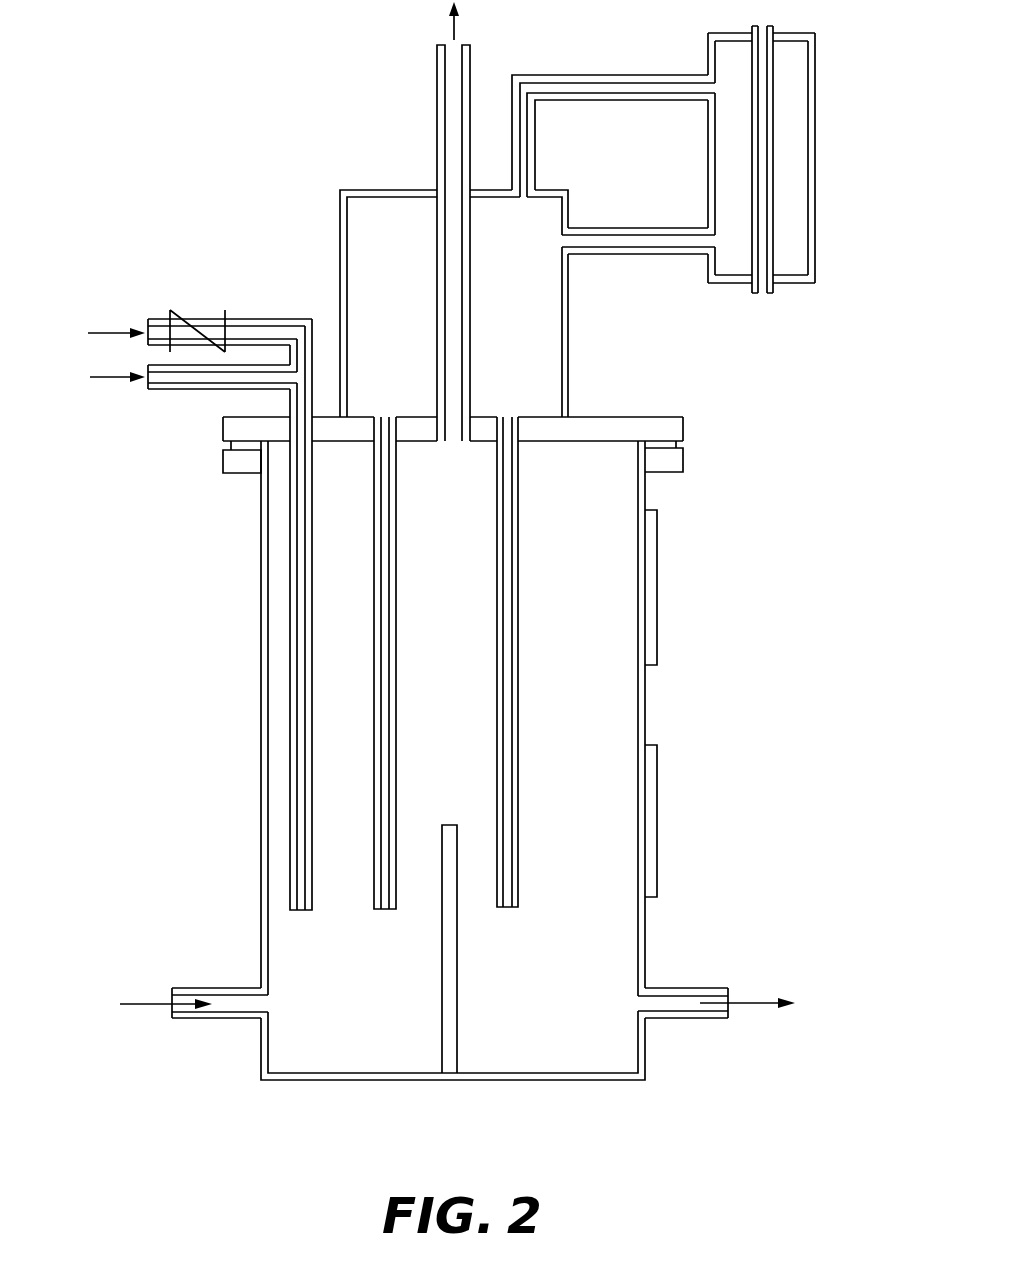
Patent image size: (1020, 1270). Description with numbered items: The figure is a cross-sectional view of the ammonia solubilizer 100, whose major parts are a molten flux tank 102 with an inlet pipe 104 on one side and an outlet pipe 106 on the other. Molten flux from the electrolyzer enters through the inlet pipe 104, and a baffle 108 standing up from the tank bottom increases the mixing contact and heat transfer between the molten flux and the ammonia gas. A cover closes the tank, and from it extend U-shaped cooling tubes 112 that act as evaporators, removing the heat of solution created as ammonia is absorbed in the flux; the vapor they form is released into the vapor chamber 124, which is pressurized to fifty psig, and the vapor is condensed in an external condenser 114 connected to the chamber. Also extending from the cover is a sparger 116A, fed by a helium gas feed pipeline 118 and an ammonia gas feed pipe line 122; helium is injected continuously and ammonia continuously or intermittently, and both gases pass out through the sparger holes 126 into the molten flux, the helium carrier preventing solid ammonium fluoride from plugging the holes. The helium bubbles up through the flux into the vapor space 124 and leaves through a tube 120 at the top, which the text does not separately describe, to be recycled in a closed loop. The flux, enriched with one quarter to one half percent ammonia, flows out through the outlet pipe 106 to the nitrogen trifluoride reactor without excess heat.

The ammonia solubilizer 100 is at (245, 740).
The molten flux tank 102 is at (645, 943).
The inlet pipe 104 is at (240, 1020).
The outlet pipe 106 is at (673, 1020).
The baffle 108 is at (453, 822).
The U-shaped cooling tubes 112 is at (397, 618).
The external condenser 114 is at (815, 140).
The sparger 116A is at (309, 605).
The helium gas feed pipeline 118 is at (263, 317).
The helium exhaust tube 120 is at (437, 158).
The ammonia gas feed pipe line 122 is at (215, 390).
The vapor chamber 124 is at (389, 292).
The sparger holes 126 is at (658, 602).